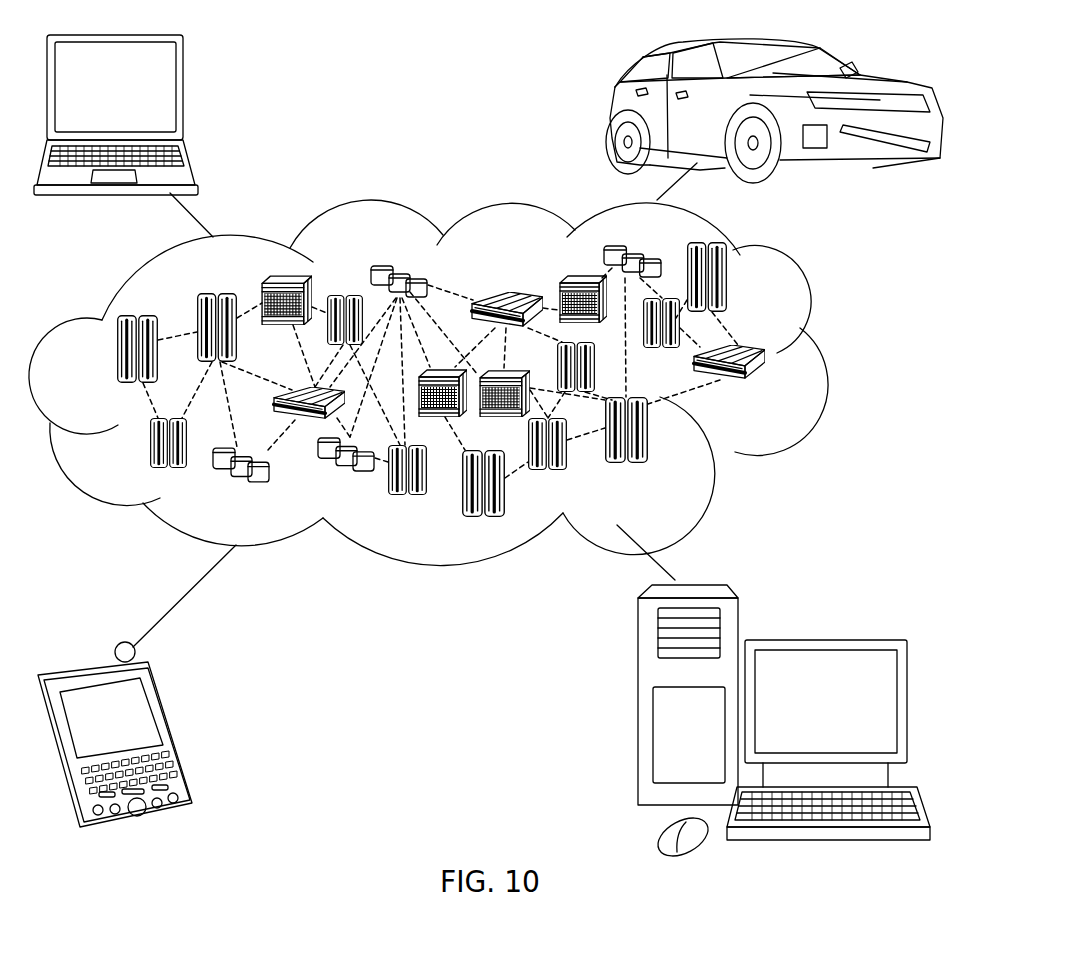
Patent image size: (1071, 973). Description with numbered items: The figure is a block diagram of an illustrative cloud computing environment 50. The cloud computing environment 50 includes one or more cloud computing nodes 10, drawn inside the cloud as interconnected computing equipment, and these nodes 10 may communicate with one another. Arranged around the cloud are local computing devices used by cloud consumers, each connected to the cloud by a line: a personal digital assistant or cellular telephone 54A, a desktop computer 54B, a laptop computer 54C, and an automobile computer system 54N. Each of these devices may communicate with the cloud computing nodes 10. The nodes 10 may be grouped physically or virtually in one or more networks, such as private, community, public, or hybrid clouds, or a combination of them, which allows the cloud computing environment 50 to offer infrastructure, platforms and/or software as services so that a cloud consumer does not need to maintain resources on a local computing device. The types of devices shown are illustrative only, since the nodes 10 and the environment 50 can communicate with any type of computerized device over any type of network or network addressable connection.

The cloud computing environment 50 is at (820, 357).
The cloud computing node 10 is at (782, 392).
The personal digital assistant or cellular telephone 54A is at (172, 730).
The desktop computer 54B is at (823, 640).
The laptop computer 54C is at (183, 97).
The automobile computer system 54N is at (607, 112).